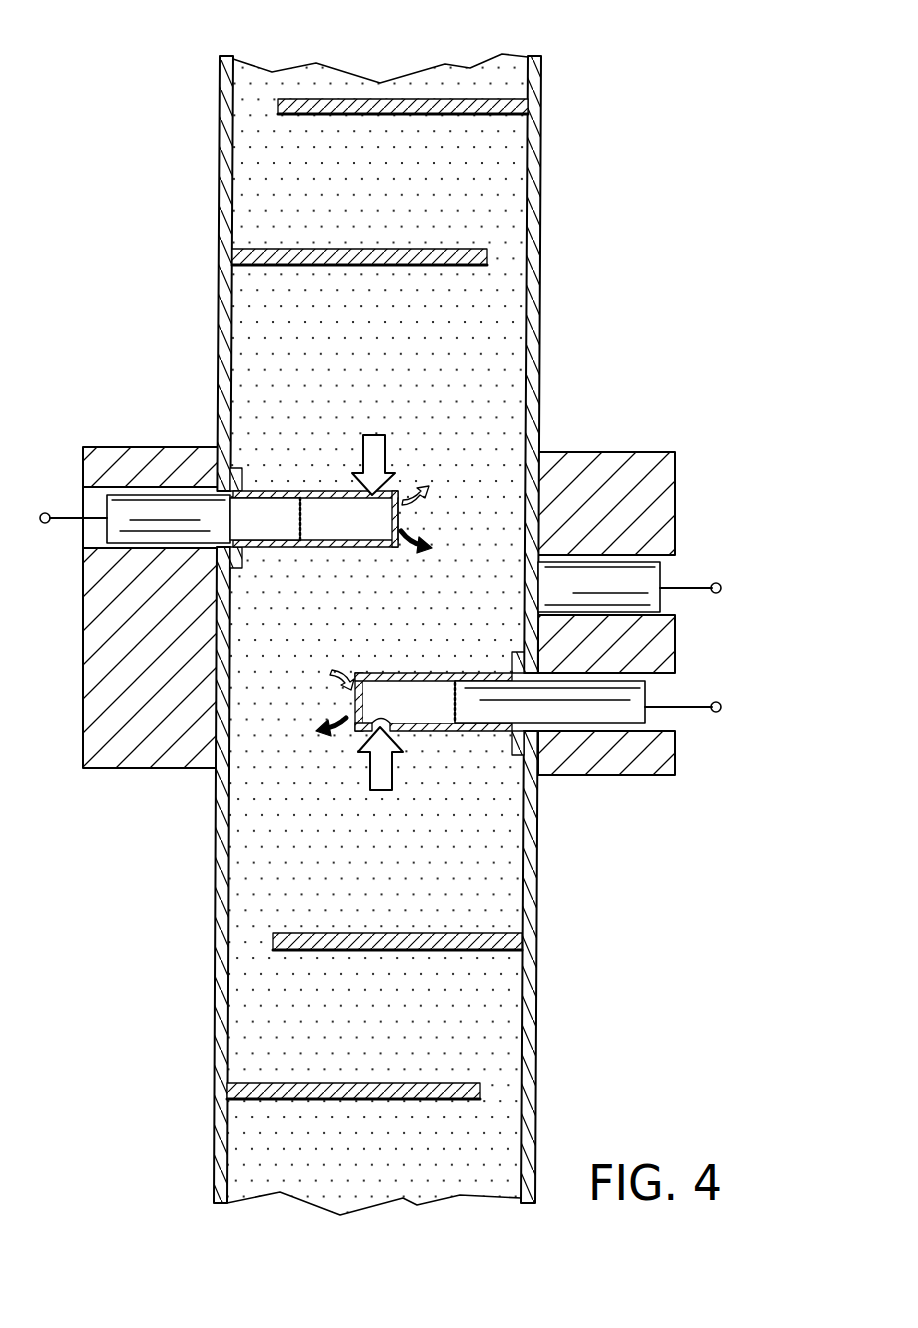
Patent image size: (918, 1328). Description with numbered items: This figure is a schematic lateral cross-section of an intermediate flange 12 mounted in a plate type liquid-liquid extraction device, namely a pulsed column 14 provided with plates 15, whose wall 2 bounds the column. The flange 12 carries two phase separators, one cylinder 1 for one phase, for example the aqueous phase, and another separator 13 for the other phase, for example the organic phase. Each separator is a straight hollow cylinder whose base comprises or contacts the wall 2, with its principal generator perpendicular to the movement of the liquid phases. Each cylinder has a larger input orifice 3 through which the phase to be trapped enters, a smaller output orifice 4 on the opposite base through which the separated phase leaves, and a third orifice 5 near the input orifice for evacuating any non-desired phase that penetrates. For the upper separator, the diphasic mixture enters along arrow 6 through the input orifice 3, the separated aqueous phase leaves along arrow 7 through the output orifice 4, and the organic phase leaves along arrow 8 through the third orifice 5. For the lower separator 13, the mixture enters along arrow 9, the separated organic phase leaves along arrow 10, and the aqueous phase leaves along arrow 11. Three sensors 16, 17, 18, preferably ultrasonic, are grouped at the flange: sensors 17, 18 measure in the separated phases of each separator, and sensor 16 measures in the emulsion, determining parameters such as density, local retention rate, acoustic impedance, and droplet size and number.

The cylinder 1 is at (297, 492).
The wall 2 is at (357, 634).
The input orifice 3 is at (350, 491).
The output orifice 4 is at (398, 541).
The third orifice 5 is at (418, 508).
The arrow 6 is at (372, 445).
The arrow 7 is at (430, 548).
The arrow 8 is at (424, 490).
The arrow 9 is at (385, 785).
The arrow 10 is at (333, 678).
The arrow 11 is at (318, 722).
The intermediate flange 12 is at (603, 470).
The phase separator 13 is at (463, 672).
The pulsed column 14 is at (536, 143).
The plates 15 is at (452, 250).
The sensor 16 is at (660, 578).
The sensor 17 is at (630, 713).
The sensor 18 is at (160, 500).